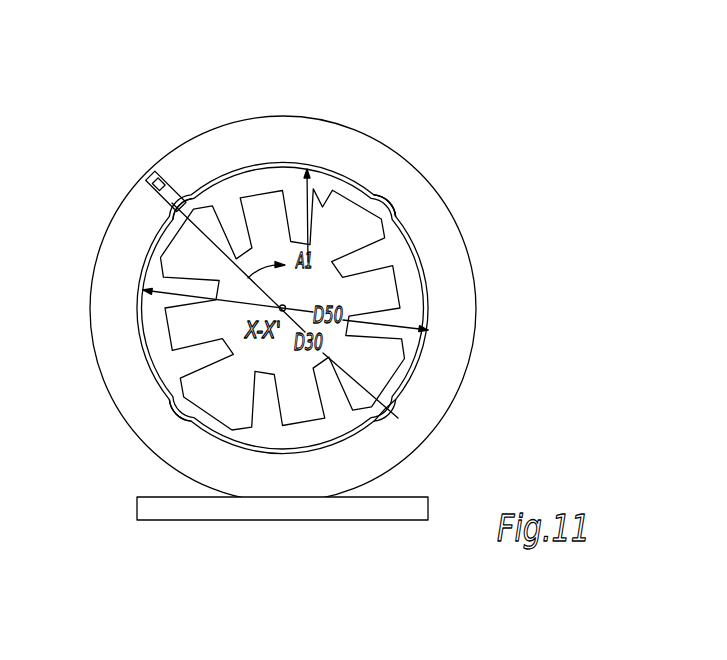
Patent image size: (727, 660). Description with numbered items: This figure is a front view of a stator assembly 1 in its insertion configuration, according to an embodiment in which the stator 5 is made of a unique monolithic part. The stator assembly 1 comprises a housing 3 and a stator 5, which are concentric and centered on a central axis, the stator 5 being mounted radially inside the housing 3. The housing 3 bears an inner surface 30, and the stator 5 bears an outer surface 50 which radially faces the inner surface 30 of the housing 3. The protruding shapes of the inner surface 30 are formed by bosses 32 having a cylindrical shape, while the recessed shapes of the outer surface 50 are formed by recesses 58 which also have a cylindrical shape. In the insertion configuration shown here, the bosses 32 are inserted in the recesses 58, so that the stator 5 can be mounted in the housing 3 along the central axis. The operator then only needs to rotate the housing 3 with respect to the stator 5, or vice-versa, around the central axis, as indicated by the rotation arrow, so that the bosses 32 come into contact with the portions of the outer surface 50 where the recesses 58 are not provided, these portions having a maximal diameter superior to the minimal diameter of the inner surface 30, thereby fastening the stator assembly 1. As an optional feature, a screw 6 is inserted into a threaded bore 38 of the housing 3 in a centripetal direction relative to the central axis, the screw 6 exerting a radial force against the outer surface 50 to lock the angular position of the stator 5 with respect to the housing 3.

The stator assembly 1 is at (293, 260).
The housing 3 is at (437, 395).
The stator 5 is at (410, 293).
The screw 6 is at (165, 185).
The inner surface 30 is at (331, 190).
The bosses 32 is at (400, 206).
The threaded bore 38 is at (172, 203).
The outer surface 50 is at (248, 160).
The recesses 58 is at (402, 208).